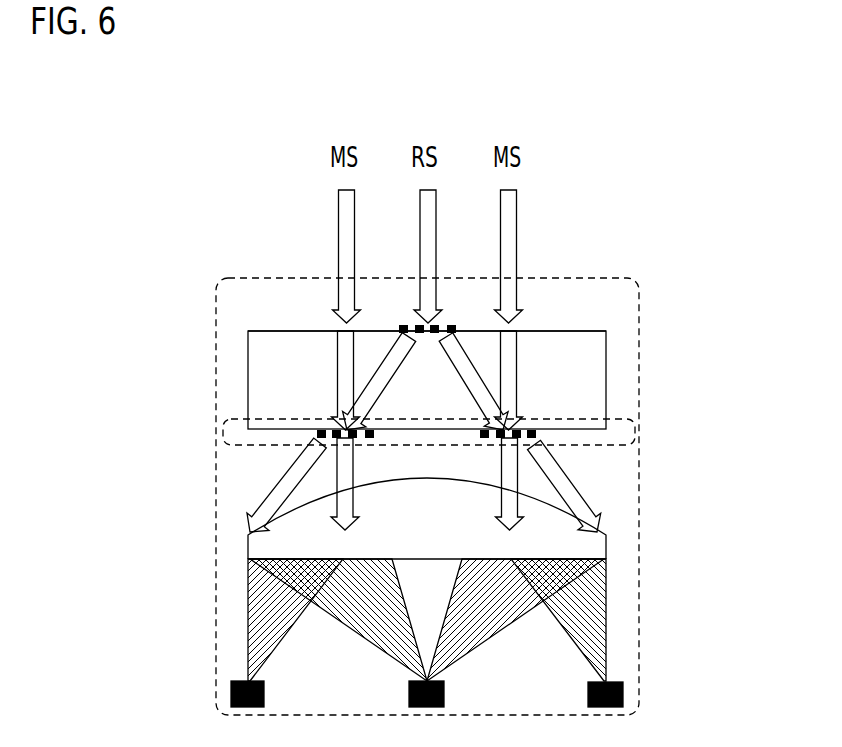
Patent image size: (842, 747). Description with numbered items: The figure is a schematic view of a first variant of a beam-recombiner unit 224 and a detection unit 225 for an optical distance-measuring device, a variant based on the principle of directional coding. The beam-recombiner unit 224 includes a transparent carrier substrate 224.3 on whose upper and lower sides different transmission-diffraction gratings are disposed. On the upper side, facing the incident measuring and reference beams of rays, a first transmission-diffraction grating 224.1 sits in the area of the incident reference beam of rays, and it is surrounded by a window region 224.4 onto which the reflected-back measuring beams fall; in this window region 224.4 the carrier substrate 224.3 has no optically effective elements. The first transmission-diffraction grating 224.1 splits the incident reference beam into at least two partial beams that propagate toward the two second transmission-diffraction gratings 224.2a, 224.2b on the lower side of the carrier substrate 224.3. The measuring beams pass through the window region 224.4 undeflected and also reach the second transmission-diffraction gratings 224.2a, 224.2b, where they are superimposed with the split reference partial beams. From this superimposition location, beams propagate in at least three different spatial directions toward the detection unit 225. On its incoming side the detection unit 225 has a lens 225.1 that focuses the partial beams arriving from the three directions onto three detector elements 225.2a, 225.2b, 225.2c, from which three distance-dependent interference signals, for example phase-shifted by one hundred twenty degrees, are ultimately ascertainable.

The beam-recombiner unit 224 is at (640, 372).
The first transmission-diffraction grating 224.1 is at (400, 325).
The second transmission-diffraction grating 224.2a is at (318, 431).
The second transmission-diffraction grating 224.2b is at (543, 432).
The transparent carrier substrate 224.3 is at (583, 355).
The window region 224.4 is at (340, 331).
The detection unit 225 is at (422, 581).
The lens 225.1 is at (275, 548).
The detector element 225.2a is at (233, 681).
The detector element 225.2b is at (446, 684).
The detector element 225.2c is at (623, 696).